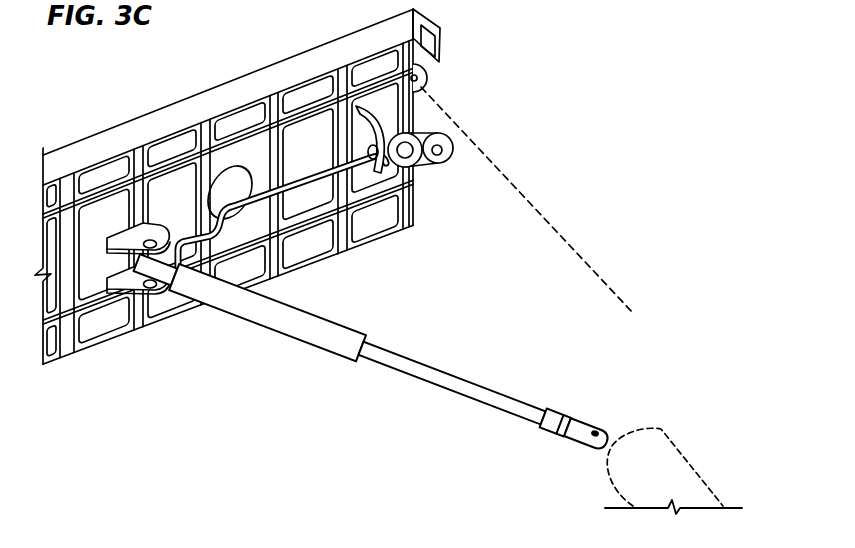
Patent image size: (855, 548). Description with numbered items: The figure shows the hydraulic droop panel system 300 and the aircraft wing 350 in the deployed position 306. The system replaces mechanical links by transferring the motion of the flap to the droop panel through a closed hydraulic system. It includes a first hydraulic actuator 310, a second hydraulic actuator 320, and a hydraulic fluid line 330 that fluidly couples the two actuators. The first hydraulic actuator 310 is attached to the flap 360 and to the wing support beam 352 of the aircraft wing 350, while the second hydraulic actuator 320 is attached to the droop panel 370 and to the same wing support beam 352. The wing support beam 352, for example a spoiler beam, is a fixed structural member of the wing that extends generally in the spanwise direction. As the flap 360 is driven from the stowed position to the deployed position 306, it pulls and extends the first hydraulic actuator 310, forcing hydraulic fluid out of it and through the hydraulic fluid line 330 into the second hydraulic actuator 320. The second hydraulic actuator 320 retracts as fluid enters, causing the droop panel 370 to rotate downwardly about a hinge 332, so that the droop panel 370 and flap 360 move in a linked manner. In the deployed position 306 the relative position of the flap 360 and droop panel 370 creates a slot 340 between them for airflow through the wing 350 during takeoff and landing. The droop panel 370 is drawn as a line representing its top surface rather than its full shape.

The hydraulic droop panel system 300 is at (359, 339).
The deployed position 306 is at (540, 111).
The first hydraulic actuator 310 is at (302, 320).
The second hydraulic actuator 320 is at (452, 160).
The hydraulic fluid line 330 is at (298, 183).
The hinge 332 is at (419, 75).
The slot 340 is at (654, 352).
The aircraft wing 350 is at (237, 188).
The wing support beam 352 is at (155, 124).
The flap 360 is at (660, 428).
The droop panel 370 is at (514, 178).